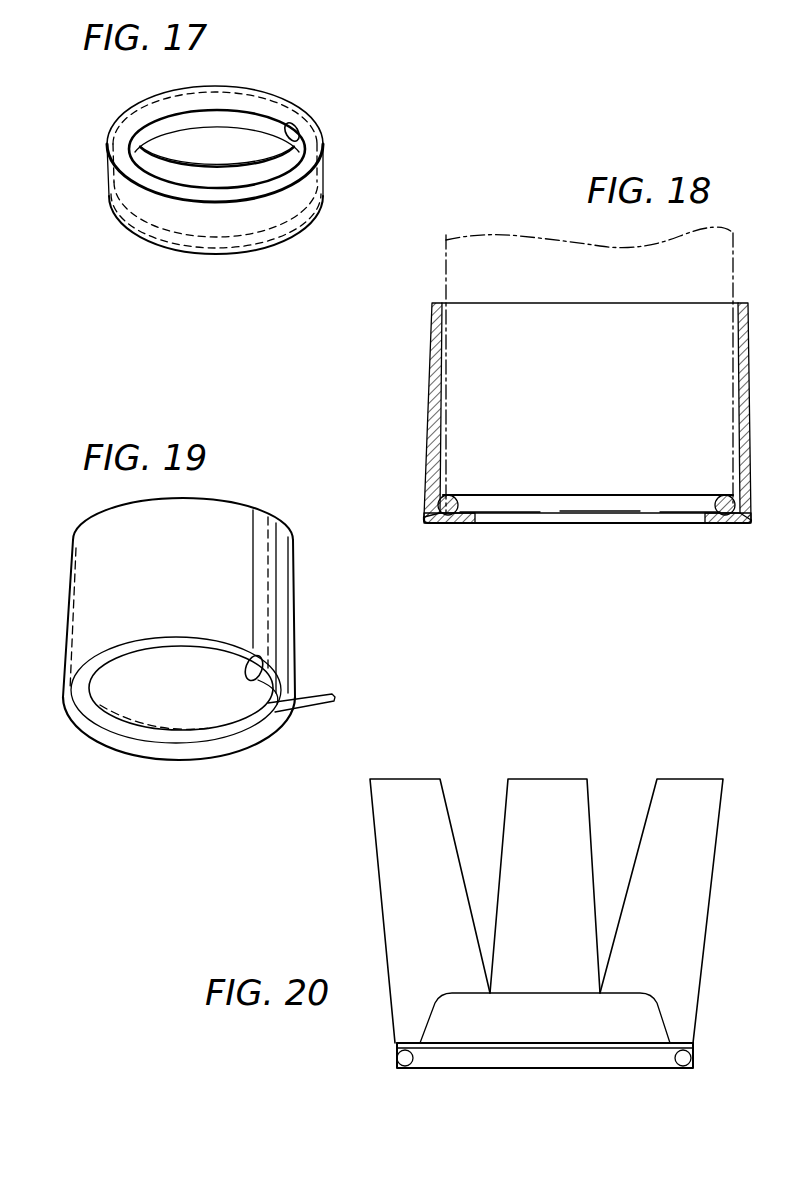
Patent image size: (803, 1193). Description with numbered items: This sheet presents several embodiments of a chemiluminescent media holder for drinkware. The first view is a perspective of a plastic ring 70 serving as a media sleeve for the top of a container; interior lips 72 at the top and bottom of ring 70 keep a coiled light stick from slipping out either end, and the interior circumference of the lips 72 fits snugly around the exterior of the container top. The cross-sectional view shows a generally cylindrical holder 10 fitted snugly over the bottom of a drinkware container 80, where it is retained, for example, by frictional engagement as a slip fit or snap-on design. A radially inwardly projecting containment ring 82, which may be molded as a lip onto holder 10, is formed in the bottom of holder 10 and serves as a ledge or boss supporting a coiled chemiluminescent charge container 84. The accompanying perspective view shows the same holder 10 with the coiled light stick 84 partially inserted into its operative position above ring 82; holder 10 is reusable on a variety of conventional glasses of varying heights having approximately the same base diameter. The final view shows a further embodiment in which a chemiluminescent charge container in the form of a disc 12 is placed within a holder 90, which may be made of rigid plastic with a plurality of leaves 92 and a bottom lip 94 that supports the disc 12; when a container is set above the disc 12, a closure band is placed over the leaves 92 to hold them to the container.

In FIG. 17, the ring 70 is at (308, 87).
In FIG. 17, the interior lips 72 is at (305, 143).
In FIG. 18, the drinkware container 80 is at (446, 285).
In FIG. 18, the holder 10 is at (406, 375).
In FIG. 19, the holder 10 is at (278, 489).
In FIG. 18, the containment ring 82 is at (472, 513).
In FIG. 19, the containment ring 82 is at (247, 665).
In FIG. 18, the coiled chemiluminescent charge container 84 is at (650, 508).
In FIG. 19, the coiled chemiluminescent charge container 84 is at (317, 713).
In FIG. 20, the holder 90 is at (342, 889).
In FIG. 20, the leaves 92 is at (392, 779).
In FIG. 20, the disc 12 is at (527, 1050).
In FIG. 20, the bottom lip 94 is at (395, 1067).